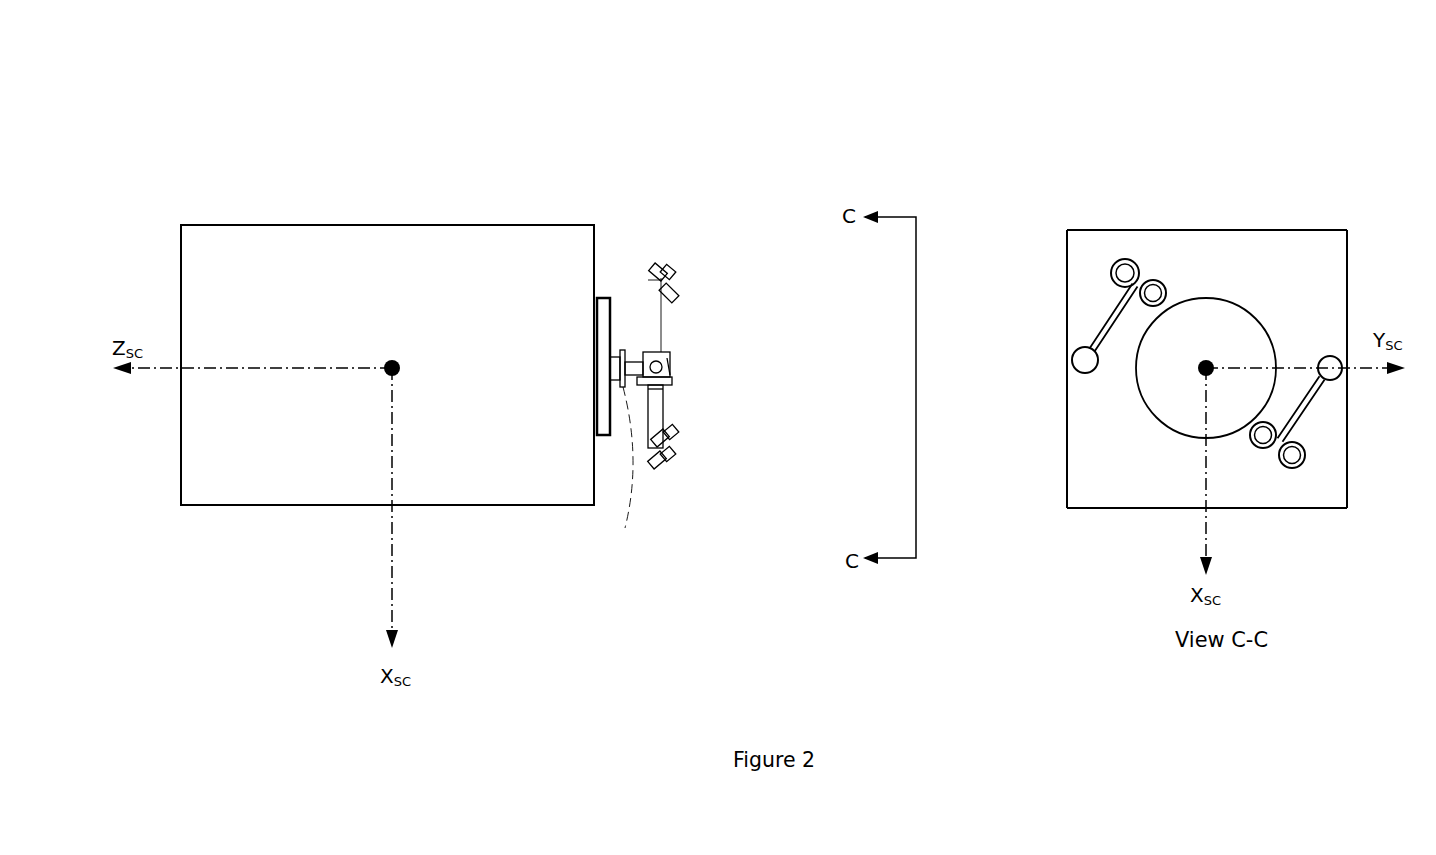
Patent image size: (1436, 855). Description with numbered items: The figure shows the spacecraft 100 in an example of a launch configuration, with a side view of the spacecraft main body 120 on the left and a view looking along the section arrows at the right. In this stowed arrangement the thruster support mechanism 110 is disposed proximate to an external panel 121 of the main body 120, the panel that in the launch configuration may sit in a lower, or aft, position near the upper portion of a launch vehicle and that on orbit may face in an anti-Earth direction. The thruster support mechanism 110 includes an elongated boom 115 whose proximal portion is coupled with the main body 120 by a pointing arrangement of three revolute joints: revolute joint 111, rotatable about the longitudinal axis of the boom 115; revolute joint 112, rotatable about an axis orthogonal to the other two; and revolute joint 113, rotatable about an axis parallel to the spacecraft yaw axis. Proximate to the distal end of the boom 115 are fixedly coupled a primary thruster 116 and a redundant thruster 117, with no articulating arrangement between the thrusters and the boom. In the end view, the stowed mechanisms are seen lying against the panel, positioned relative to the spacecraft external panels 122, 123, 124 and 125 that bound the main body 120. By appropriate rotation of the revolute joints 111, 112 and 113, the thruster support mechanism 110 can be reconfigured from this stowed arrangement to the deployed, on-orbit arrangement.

The spacecraft 100 is at (351, 281).
The thruster support mechanism 110 is at (701, 396).
The revolute joint 111 is at (672, 375).
The revolute joint 112 is at (670, 358).
The revolute joint 113 is at (610, 487).
The boom 115 is at (1108, 315).
The primary thruster 116 is at (672, 267).
The redundant thruster 117 is at (678, 292).
The main body 120 is at (296, 287).
The external panel 121 is at (594, 260).
The external panel 122 is at (1347, 285).
The external panel 123 is at (1260, 508).
The external panel 124 is at (1067, 452).
The external panel 125 is at (1255, 230).